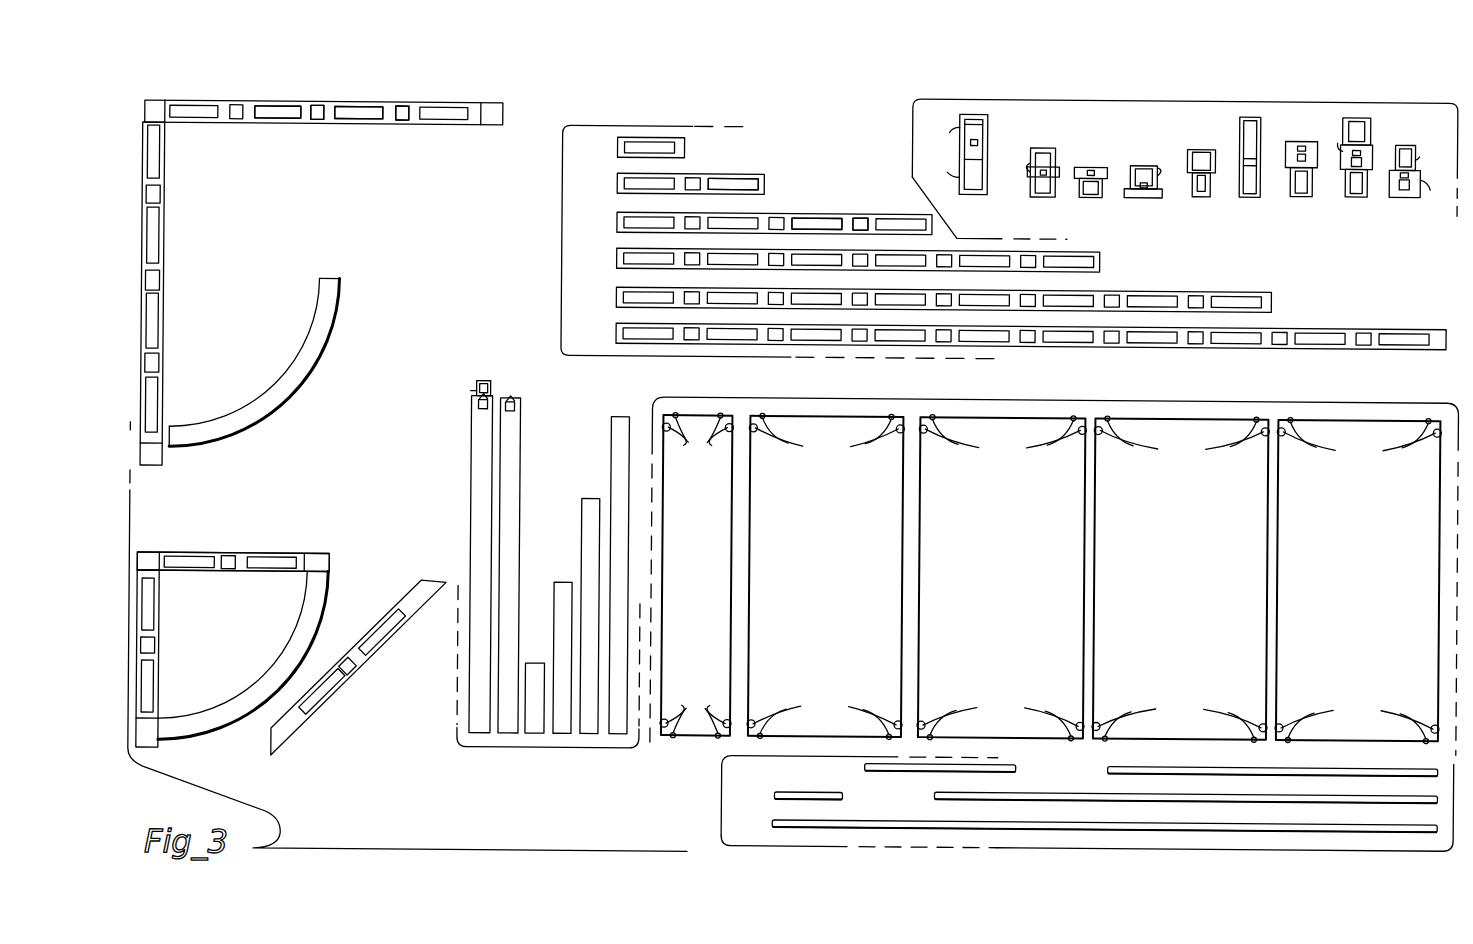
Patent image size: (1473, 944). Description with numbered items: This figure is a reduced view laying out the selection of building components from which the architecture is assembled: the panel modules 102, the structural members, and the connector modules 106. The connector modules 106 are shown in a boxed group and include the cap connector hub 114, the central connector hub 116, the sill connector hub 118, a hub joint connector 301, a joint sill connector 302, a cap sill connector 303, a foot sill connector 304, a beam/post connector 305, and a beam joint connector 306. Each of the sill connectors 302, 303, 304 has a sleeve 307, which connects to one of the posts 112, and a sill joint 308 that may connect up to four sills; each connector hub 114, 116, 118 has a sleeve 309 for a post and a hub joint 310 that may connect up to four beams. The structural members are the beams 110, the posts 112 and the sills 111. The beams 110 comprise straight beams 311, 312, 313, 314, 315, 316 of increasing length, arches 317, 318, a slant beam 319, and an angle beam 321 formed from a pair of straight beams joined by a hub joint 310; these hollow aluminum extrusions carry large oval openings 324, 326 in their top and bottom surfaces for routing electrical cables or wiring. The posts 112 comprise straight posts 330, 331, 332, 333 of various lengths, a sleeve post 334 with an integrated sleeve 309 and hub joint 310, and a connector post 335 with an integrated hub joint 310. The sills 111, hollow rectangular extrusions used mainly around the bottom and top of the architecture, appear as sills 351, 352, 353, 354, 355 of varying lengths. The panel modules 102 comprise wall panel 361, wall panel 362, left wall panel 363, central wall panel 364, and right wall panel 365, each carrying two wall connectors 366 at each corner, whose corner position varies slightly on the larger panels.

The panel modules 102 is at (1064, 393).
The connector modules 106 is at (1194, 93).
The beams 110 is at (167, 206).
The sills 111 is at (723, 779).
The posts 112 is at (558, 744).
The cap connector hub 114 is at (1300, 190).
The central connector hub 116 is at (1355, 190).
The sill connector hub 118 is at (1403, 190).
The hub joint connector 301 is at (970, 190).
The joint sill connector 302 is at (1040, 192).
The cap sill connector 303 is at (1090, 192).
The foot sill connector 304 is at (1140, 192).
The beam/post connector 305 is at (1197, 190).
The beam joint connector 306 is at (1247, 190).
The sleeve 307 is at (1022, 161).
The sill joint 308 is at (1057, 162).
The sleeve 309 is at (957, 171).
The hub joint 310 is at (1336, 136).
The straight beam 311 is at (615, 146).
The straight beam 312 is at (615, 182).
The straight beam 313 is at (615, 221).
The straight beam 314 is at (615, 257).
The straight beam 315 is at (615, 296).
The straight beam 316 is at (615, 332).
The arch 317 is at (243, 410).
The arch 318 is at (233, 699).
The slant beam 319 is at (362, 642).
The angle beam 321 is at (220, 551).
The large oval opening 324 is at (356, 105).
The large oval opening 326 is at (399, 119).
The straight post 330 is at (531, 660).
The straight post 331 is at (558, 579).
The straight post 332 is at (586, 495).
The straight post 333 is at (614, 413).
The sleeve post 334 is at (480, 378).
The connector post 335 is at (508, 395).
The sill 351 is at (777, 791).
The sill 352 is at (867, 762).
The sill 353 is at (1110, 762).
The sill 354 is at (937, 789).
The sill 355 is at (777, 818).
The wall panel 361 is at (718, 583).
The wall panel 362 is at (847, 583).
The left wall panel 363 is at (1023, 583).
The central wall panel 364 is at (1202, 583).
The right wall panel 365 is at (1379, 583).
The wall connectors 366 is at (1051, 578).